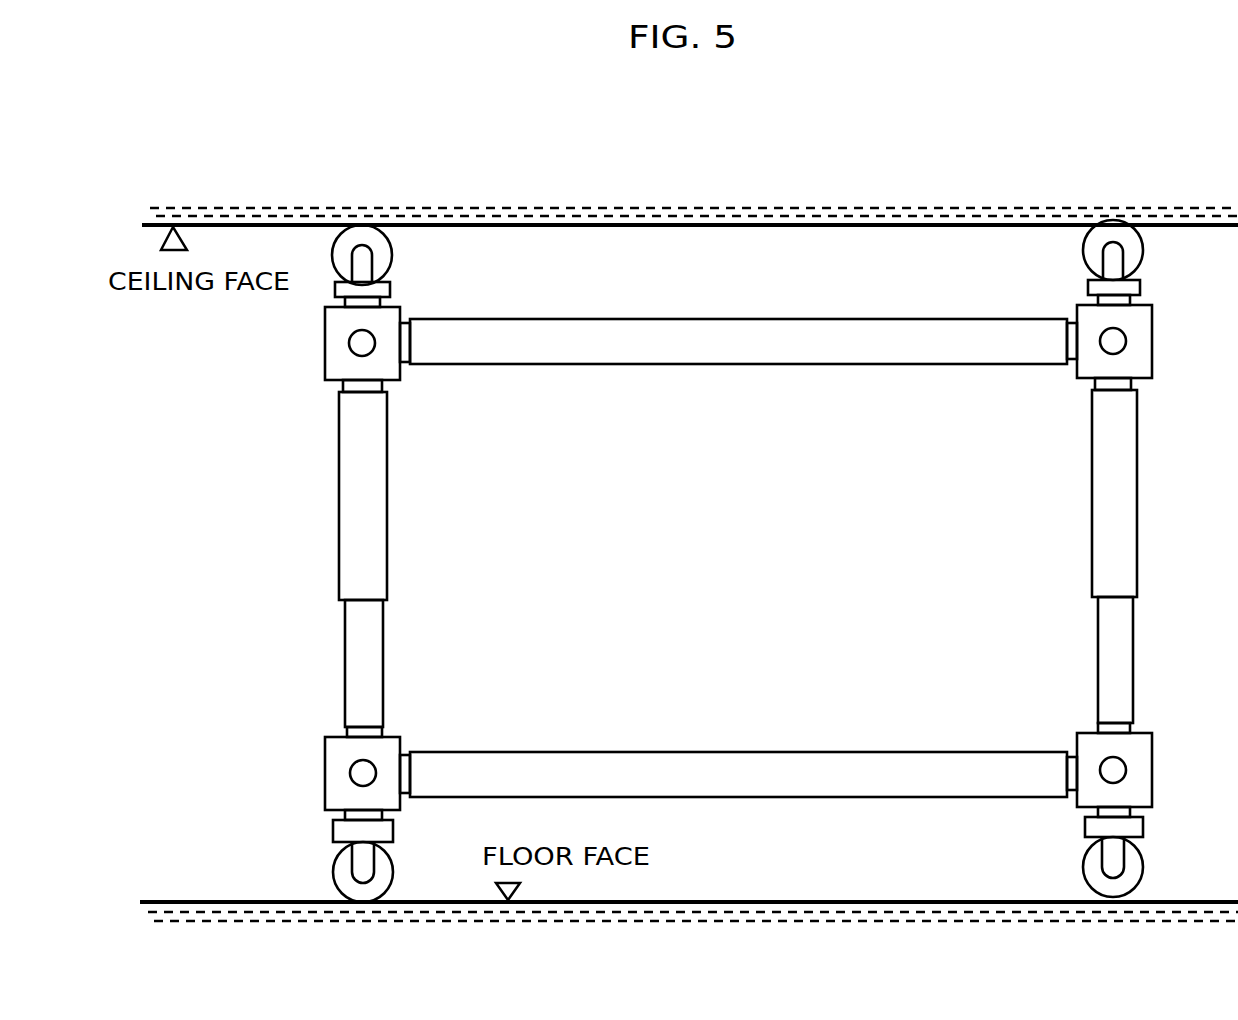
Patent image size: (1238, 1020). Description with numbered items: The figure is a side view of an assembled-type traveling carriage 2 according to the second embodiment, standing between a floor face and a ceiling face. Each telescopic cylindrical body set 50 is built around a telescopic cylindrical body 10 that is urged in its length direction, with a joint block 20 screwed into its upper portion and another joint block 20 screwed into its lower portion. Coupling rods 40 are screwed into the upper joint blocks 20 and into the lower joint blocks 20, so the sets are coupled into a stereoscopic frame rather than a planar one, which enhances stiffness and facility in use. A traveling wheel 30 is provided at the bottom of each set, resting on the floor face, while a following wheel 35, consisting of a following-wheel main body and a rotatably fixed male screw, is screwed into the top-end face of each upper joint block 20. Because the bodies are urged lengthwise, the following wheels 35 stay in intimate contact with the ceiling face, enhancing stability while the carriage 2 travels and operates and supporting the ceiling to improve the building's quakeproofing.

The assembled-type traveling carriage 2 is at (742, 578).
The telescopic cylindrical body 10 is at (357, 508).
The joint block 20 is at (326, 340).
The traveling wheel 30 is at (336, 868).
The following wheel 35 is at (384, 257).
The coupling rod 40 is at (773, 335).
The telescopic cylindrical body set 50 is at (199, 307).